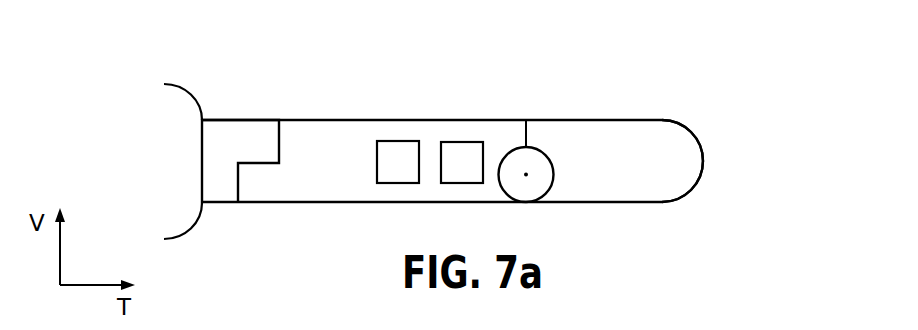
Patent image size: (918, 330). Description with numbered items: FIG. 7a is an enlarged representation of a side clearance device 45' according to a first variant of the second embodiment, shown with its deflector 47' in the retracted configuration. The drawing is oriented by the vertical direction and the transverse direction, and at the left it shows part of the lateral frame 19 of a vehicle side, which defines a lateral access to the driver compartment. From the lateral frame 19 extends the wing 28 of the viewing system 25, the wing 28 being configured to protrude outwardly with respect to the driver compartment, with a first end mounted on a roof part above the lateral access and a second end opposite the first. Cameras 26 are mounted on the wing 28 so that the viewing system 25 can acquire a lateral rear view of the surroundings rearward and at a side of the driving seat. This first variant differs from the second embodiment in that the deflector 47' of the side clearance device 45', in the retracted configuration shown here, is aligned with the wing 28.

The lateral frame 19 is at (190, 90).
The viewing system 25 is at (579, 86).
The wing 28 is at (347, 112).
The cameras 26 is at (402, 141).
The side clearance device 45' is at (642, 111).
The deflector 47' is at (734, 156).